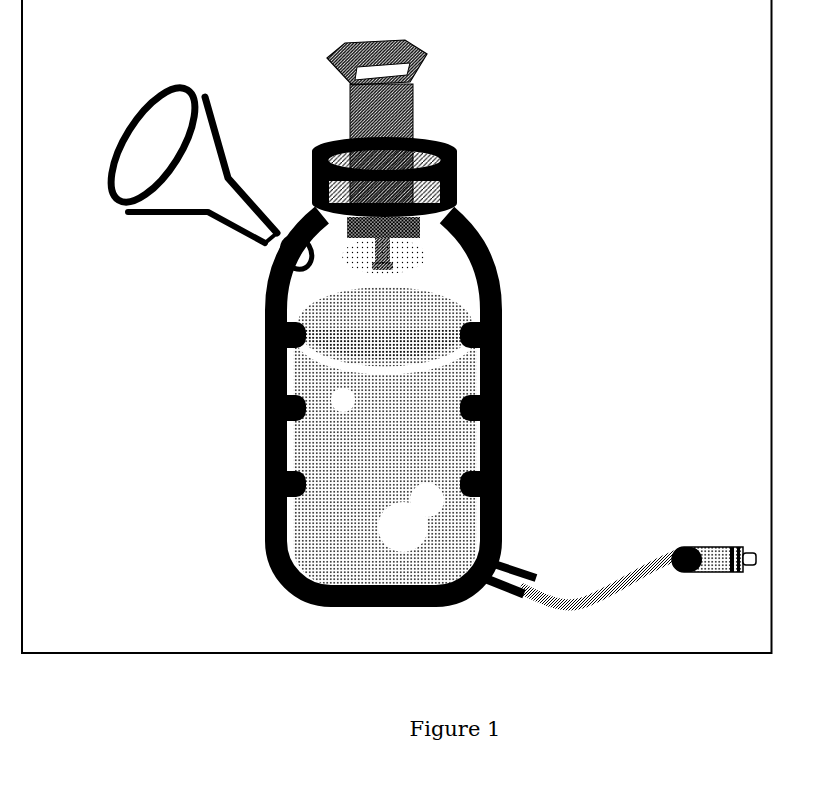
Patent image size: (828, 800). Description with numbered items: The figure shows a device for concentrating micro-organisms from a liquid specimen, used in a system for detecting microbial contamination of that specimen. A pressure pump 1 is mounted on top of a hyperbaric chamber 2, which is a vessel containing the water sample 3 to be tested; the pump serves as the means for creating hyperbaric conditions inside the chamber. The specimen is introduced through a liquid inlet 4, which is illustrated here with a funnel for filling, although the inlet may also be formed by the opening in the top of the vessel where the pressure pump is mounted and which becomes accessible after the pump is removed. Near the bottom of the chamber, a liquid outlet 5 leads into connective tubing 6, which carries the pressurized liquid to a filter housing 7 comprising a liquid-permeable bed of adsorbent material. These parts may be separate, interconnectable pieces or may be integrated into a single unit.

The pressure pump 1 is at (384, 155).
The hyperbaric chamber 2 is at (399, 405).
The water sample 3 is at (385, 436).
The liquid inlet 4 is at (206, 177).
The liquid outlet 5 is at (505, 568).
The connective tubing 6 is at (598, 590).
The filter housing 7 is at (714, 545).